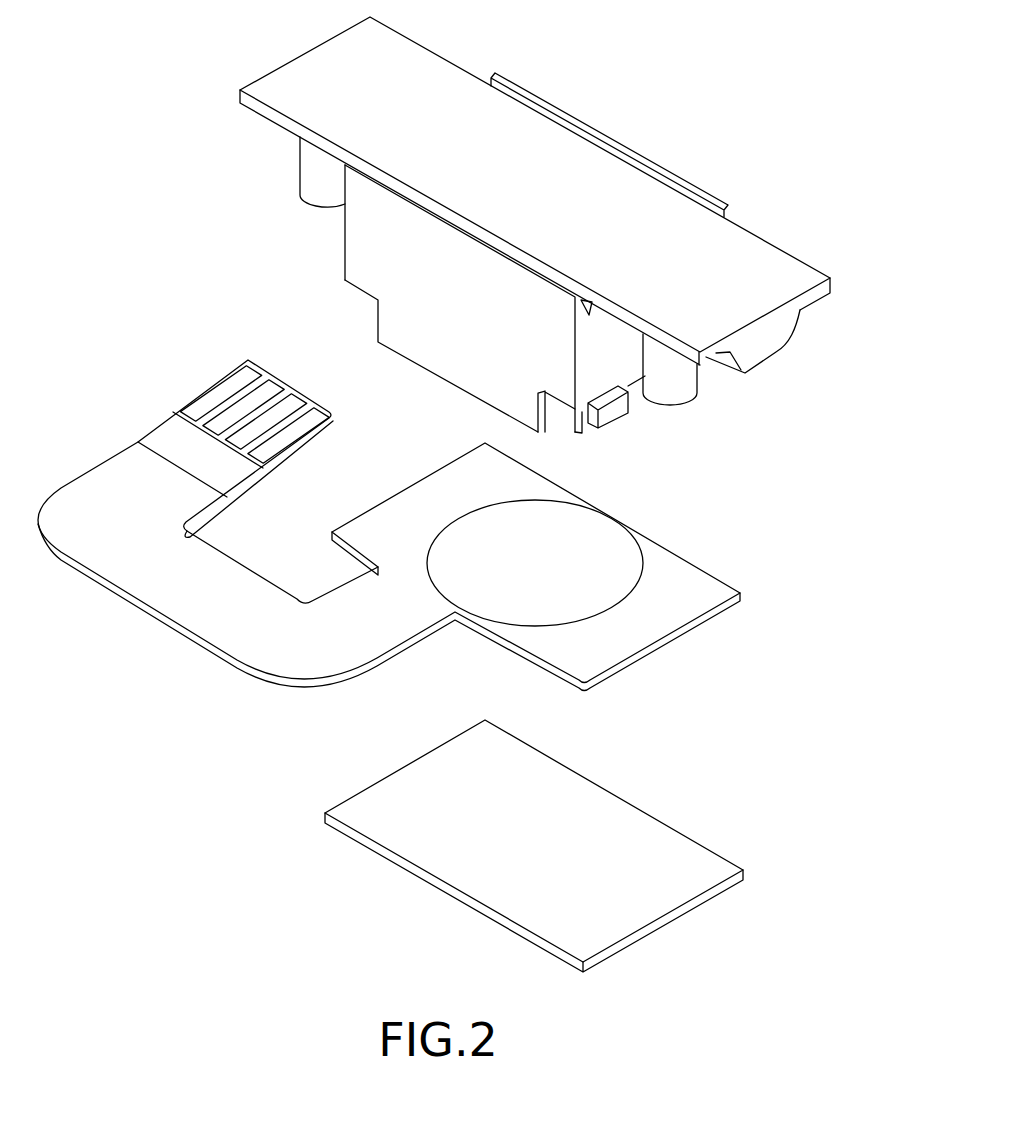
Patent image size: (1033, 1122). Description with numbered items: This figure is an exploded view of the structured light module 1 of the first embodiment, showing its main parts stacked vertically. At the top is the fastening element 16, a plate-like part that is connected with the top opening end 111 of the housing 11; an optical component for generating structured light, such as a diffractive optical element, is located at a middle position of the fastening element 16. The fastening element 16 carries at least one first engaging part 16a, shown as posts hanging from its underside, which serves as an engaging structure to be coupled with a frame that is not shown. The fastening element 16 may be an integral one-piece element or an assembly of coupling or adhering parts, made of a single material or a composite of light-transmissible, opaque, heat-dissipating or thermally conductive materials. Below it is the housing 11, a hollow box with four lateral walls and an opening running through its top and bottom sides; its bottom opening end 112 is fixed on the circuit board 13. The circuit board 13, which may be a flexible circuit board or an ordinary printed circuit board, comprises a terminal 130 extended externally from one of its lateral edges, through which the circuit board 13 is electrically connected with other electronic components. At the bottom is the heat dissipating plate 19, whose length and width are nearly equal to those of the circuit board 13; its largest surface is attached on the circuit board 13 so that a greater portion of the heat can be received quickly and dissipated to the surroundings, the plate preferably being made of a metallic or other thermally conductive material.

The structured light module 1 is at (721, 97).
The housing 11 is at (376, 278).
The top opening end 111 is at (588, 308).
The bottom opening end 112 is at (441, 384).
The circuit board 13 is at (194, 607).
The terminal 130 is at (213, 393).
The fastening element 16 is at (752, 262).
The first engaging part 16a is at (318, 174).
The heat dissipating plate 19 is at (623, 828).